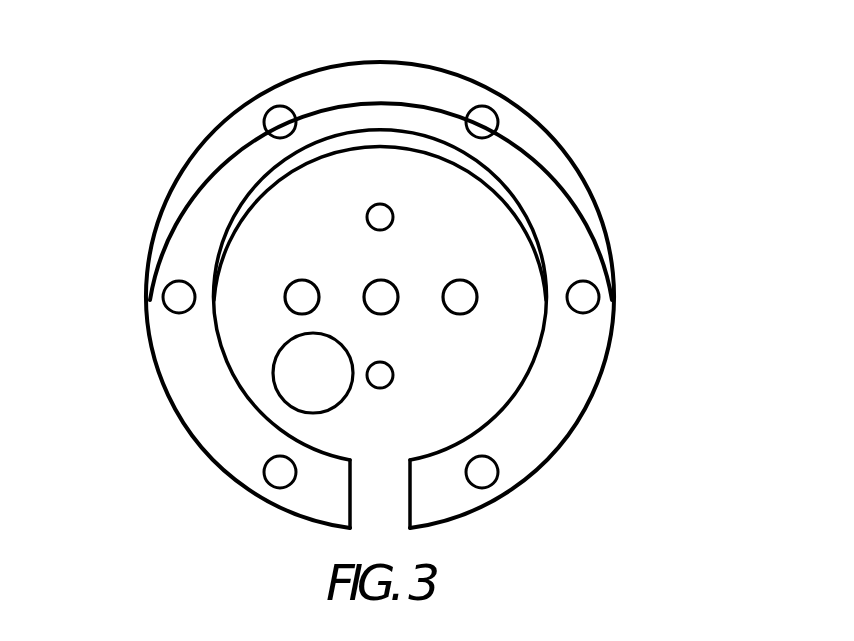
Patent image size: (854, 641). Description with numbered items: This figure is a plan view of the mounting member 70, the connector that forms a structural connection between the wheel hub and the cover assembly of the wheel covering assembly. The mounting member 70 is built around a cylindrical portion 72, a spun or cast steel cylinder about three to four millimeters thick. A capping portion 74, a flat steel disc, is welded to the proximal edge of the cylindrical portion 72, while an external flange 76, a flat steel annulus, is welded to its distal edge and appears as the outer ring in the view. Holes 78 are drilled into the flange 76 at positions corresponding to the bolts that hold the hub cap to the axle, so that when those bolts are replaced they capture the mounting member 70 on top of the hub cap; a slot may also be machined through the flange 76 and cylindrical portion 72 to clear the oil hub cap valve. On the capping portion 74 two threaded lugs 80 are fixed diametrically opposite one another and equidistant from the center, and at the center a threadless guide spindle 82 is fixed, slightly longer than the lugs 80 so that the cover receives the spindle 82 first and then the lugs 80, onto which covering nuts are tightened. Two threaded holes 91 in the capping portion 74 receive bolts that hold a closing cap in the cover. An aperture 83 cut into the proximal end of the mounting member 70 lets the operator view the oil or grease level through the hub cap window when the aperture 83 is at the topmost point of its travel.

The mounting member 70 is at (637, 123).
The cylindrical portion 72 is at (523, 207).
The capping portion 74 is at (308, 248).
The external flange 76 is at (573, 377).
The holes 78 is at (270, 122).
The threaded lugs 80 is at (300, 290).
The guide spindle 82 is at (382, 288).
The aperture 83 is at (287, 404).
The threaded holes 91 is at (367, 217).